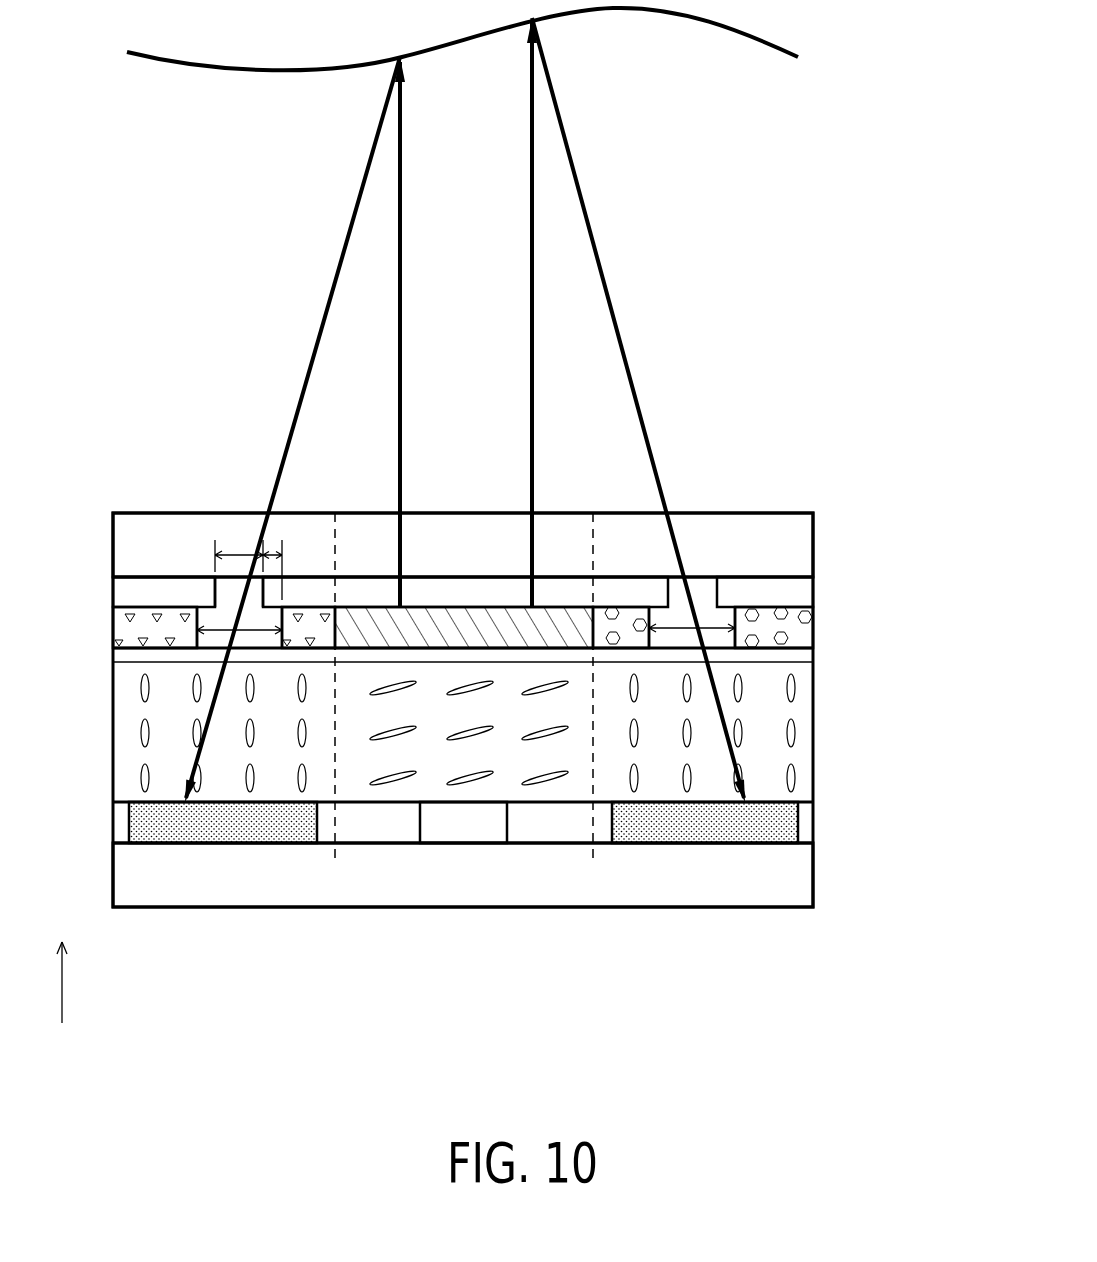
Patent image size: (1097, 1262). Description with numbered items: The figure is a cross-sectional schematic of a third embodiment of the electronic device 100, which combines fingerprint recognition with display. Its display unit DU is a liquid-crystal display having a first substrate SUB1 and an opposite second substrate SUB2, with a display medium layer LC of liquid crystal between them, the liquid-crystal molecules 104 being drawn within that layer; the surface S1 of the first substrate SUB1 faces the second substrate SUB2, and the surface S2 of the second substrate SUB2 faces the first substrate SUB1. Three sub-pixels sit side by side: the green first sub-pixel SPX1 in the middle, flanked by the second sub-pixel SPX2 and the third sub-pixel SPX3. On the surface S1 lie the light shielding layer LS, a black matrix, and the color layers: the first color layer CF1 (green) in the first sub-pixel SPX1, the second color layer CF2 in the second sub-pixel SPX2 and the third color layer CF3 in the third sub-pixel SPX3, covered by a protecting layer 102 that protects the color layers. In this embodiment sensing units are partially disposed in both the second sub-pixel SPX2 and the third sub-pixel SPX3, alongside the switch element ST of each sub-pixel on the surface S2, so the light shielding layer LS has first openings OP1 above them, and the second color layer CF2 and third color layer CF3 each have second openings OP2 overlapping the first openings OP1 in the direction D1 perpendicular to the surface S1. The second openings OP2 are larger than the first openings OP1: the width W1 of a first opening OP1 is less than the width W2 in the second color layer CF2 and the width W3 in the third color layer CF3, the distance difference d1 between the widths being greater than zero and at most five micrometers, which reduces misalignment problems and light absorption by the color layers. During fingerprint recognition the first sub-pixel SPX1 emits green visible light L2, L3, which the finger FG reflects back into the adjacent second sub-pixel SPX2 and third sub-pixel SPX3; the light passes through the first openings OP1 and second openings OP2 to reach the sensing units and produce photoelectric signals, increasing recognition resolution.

The electronic device 100 is at (787, 244).
The finger FG is at (750, 34).
The visible light L2 is at (364, 181).
The visible light L3 is at (569, 157).
The display unit DU is at (894, 513).
The first substrate SUB1 is at (798, 535).
The second substrate SUB2 is at (798, 868).
The surface of the first substrate S1 is at (132, 577).
The surface of the second substrate S2 is at (402, 843).
The light shielding layer LS is at (798, 585).
The first opening OP1 is at (213, 593).
The second opening OP2 is at (193, 638).
The first color layer CF1 is at (507, 607).
The second color layer CF2 is at (148, 612).
The third color layer CF3 is at (787, 600).
The width of the first opening W1 is at (242, 553).
The width of the second opening W2 is at (193, 618).
The width of the second opening of the third color layer W3 is at (715, 614).
The distance difference d1 is at (270, 542).
The protecting layer 102 is at (798, 655).
The liquid crystal molecules 104 is at (141, 685).
The display medium layer LC is at (470, 731).
The switch element ST is at (471, 835).
The first sub-pixel SPX1 is at (593, 953).
The second sub-pixel SPX2 is at (335, 953).
The third sub-pixel SPX3 is at (813, 953).
The direction D1 is at (59, 963).